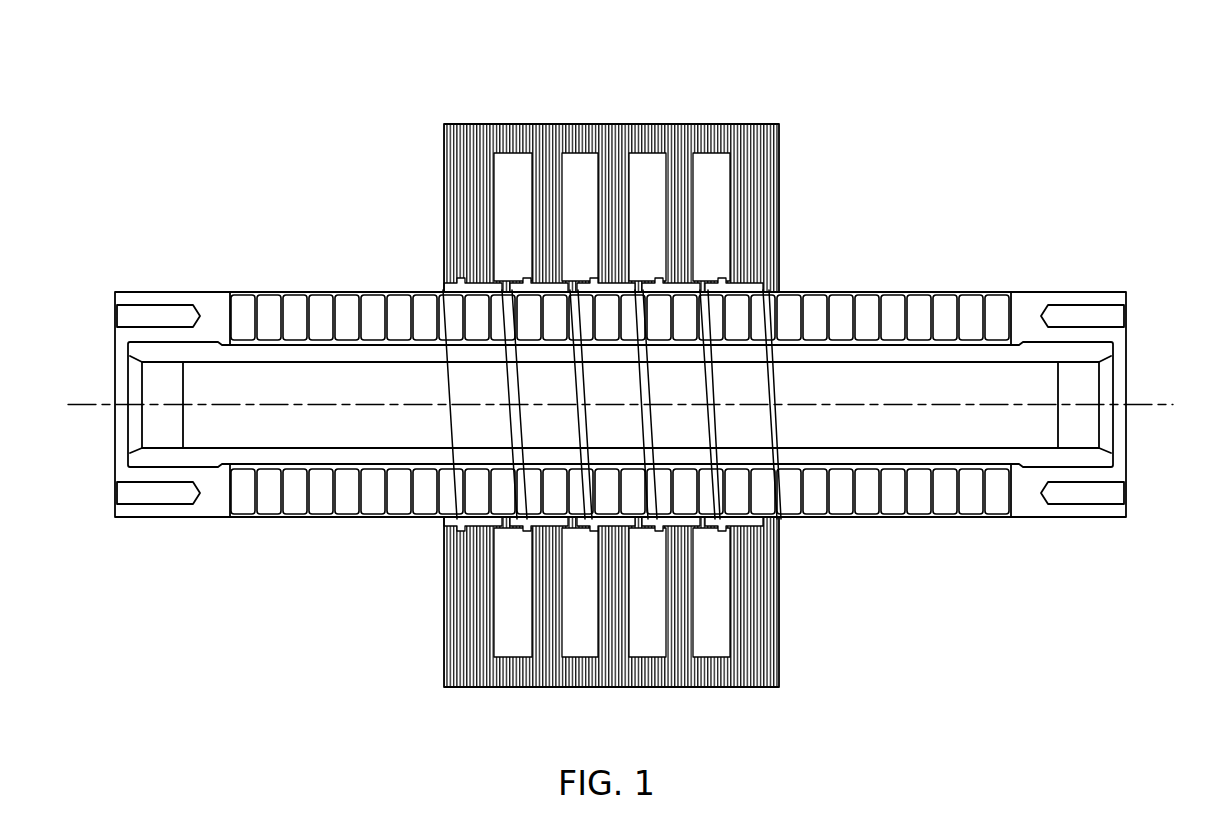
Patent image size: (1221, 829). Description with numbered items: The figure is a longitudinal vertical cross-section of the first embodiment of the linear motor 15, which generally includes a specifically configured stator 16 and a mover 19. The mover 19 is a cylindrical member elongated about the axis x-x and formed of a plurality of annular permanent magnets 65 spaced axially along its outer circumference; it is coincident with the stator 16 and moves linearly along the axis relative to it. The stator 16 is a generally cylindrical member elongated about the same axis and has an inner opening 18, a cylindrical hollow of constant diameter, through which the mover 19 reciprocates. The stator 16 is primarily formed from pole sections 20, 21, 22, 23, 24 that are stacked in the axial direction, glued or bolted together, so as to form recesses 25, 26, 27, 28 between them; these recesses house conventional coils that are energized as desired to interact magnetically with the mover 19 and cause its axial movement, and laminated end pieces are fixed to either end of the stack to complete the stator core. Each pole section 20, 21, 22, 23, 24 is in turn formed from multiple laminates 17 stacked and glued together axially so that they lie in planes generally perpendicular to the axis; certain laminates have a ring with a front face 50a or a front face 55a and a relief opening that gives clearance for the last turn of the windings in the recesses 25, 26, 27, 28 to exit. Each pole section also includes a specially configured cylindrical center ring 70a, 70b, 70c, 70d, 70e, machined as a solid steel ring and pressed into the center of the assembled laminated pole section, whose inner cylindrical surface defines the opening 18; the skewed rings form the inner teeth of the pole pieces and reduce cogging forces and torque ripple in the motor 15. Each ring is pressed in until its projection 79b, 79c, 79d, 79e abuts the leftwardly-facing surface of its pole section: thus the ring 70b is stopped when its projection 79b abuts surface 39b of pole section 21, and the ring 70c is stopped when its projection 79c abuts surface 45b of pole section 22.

The linear motor 15 is at (621, 389).
The stator 16 is at (630, 389).
The laminates 17 is at (602, 692).
The inner opening 18 is at (621, 454).
The mover 19 is at (1057, 248).
The pole section 20 is at (478, 108).
The pole section 21 is at (542, 108).
The pole section 22 is at (612, 108).
The pole section 23 is at (682, 108).
The pole section 24 is at (742, 111).
The recess 25 is at (506, 178).
The recess 26 is at (585, 165).
The recess 27 is at (645, 163).
The recess 28 is at (708, 163).
The leftwardly-facing surface 39b is at (592, 540).
The leftwardly-facing surface 45b is at (530, 637).
The front face 50a is at (627, 628).
The front face 55a is at (562, 642).
The annular permanent magnets 65 is at (920, 498).
The center ring 70a is at (442, 281).
The center ring 70b is at (512, 278).
The center ring 70c is at (632, 276).
The center ring 70d is at (689, 277).
The center ring 70e is at (740, 274).
The projection 79b is at (524, 273).
The projection 79c is at (597, 620).
The projection 79d is at (663, 550).
The projection 79e is at (723, 550).